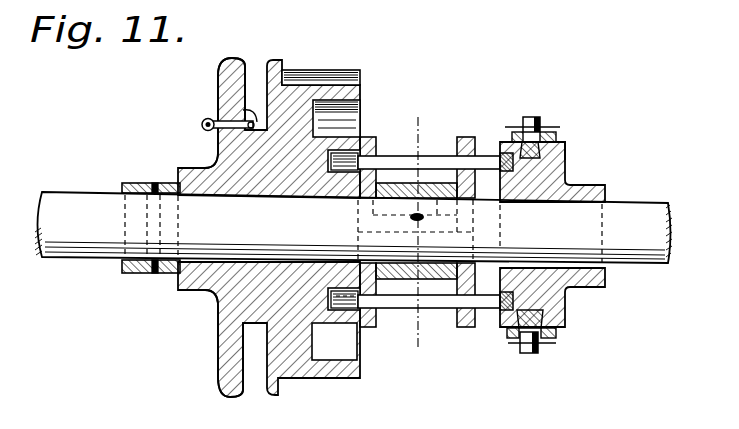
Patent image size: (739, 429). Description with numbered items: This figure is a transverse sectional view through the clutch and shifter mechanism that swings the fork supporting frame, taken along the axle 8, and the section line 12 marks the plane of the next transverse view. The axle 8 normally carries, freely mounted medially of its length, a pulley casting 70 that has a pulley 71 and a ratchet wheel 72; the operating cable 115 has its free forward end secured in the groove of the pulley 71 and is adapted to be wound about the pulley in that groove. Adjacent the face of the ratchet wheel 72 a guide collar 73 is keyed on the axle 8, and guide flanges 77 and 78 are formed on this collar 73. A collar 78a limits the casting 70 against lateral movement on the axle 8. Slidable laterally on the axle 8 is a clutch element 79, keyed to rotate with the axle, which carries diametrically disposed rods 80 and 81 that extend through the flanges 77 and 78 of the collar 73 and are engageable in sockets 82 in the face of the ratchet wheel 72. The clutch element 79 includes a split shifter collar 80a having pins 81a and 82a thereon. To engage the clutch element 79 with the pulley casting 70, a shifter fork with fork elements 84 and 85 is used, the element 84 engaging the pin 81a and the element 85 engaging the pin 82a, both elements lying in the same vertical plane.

The axle 8 is at (648, 265).
The section line 12— 12 is at (431, 120).
The pulley casting 70 is at (301, 96).
The pulley 71 is at (251, 92).
The ratchet wheel 72 is at (346, 88).
The guide collar 73 is at (400, 183).
The guide flange 77 is at (368, 137).
The guide flange 78 is at (474, 137).
The collar 78a is at (141, 276).
The clutch element 79 is at (558, 176).
The rod 80 is at (435, 158).
The split shifter collar 80a is at (567, 148).
The rod 81 is at (440, 312).
The pin 81a is at (548, 108).
The socket 82 is at (337, 298).
The pin 82a is at (535, 354).
The fork element 84 is at (555, 130).
The fork element 85 is at (556, 338).
The operating cable 115 is at (228, 106).